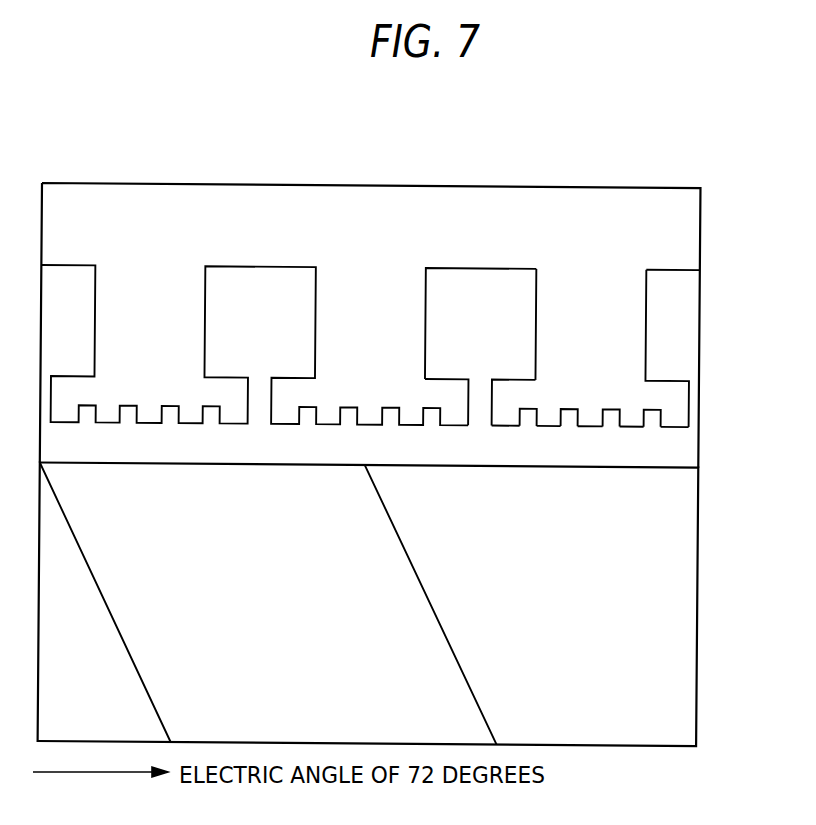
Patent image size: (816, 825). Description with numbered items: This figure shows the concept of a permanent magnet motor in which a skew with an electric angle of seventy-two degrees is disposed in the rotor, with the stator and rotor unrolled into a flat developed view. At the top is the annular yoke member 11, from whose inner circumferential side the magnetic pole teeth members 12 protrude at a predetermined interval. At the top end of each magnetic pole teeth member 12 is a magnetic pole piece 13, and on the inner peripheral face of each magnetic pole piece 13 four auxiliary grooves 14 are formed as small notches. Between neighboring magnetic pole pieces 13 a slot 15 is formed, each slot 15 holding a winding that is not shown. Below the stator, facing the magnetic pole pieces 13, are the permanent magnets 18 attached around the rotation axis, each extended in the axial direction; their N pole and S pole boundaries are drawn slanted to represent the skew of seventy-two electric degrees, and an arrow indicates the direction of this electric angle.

The annular yoke member 11 is at (668, 212).
The magnetic pole teeth member 12 is at (628, 313).
The magnetic pole piece 13 is at (670, 399).
The auxiliary groove 14 is at (653, 420).
The slot 15 is at (478, 421).
The permanent magnet 18 is at (660, 694).